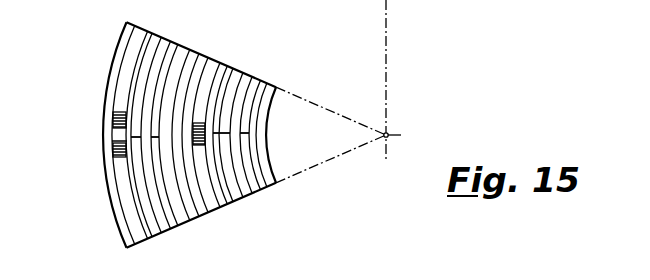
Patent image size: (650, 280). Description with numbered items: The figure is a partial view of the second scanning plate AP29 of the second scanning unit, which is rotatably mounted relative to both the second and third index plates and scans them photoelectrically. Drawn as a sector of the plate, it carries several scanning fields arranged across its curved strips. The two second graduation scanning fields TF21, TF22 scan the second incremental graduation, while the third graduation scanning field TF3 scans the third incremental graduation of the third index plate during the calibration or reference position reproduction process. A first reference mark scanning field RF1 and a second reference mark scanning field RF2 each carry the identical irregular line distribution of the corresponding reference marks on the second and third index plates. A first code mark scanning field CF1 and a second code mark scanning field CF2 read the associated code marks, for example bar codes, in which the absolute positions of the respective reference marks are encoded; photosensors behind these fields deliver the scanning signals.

The second scanning plate AP29 is at (268, 94).
The second graduation scanning field TF21 is at (114, 113).
The second graduation scanning field TF22 is at (113, 143).
The second reference mark scanning field RF2 is at (139, 138).
The second code mark scanning field CF2 is at (157, 138).
The third graduation scanning field TF3 is at (193, 146).
The first reference mark scanning field RF1 is at (221, 134).
The first code mark scanning field CF1 is at (245, 134).